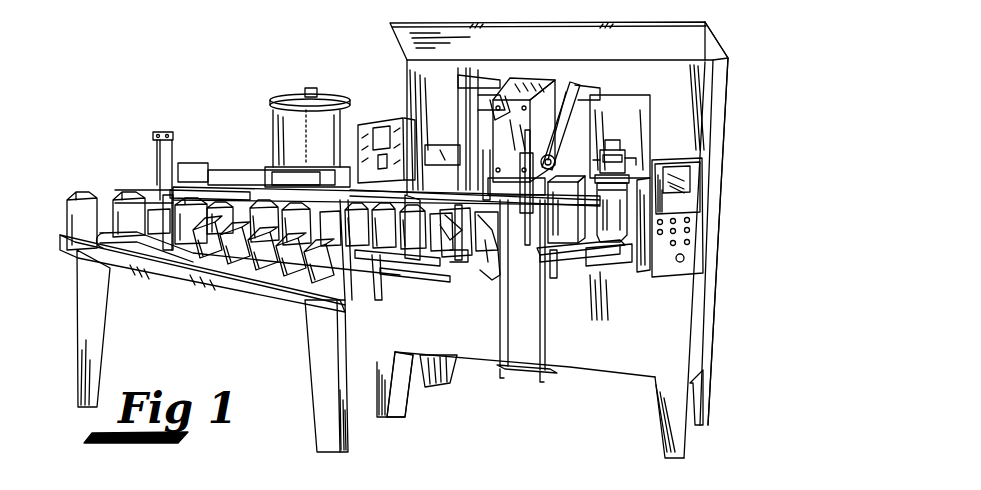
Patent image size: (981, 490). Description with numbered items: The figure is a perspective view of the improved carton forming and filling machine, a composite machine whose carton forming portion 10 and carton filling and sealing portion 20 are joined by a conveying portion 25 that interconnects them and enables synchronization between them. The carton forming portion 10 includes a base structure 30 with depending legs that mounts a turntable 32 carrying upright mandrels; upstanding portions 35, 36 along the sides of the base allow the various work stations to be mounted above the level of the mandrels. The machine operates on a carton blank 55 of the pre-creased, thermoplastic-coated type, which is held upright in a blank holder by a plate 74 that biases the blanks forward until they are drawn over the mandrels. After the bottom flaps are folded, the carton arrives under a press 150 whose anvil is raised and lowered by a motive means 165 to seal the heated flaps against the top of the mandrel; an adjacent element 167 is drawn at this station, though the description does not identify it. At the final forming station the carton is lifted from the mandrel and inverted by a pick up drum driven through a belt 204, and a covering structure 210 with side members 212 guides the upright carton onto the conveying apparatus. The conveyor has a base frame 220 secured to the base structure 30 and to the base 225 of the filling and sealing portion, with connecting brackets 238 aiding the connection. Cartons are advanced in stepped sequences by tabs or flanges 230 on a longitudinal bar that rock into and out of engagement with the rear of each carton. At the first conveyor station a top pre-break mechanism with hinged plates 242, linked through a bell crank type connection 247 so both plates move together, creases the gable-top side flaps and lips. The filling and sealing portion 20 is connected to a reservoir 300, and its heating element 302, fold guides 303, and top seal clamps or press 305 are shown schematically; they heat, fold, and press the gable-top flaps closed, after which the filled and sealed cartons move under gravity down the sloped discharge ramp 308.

The carton forming portion 10 is at (743, 66).
The carton filling and sealing portion 20 is at (224, 52).
The conveying portion 25 is at (412, 326).
The base structure 30 is at (613, 378).
The turntable 32 is at (598, 265).
The upstanding portion 35 is at (722, 120).
The upstanding portion 36 is at (403, 104).
The carton blank 55 is at (470, 136).
The plate 74 is at (462, 158).
The press 150 is at (660, 151).
The motive means 165 is at (630, 142).
The container 167 is at (618, 262).
The belt 204 is at (575, 112).
The covering structure 210 is at (510, 92).
The side members 212 is at (565, 262).
The base frame 220 is at (392, 260).
The base 225 is at (300, 358).
The tabs or flanges 230 is at (382, 268).
The connecting brackets 238 is at (525, 375).
The hinged plates 242 is at (492, 275).
The bell crank type connection 247 is at (458, 262).
The reservoir 300 is at (325, 100).
The heating element 302 is at (228, 170).
The fold guides 303 is at (193, 193).
The top seal clamps or press 305 is at (185, 160).
The discharge ramp 308 is at (163, 283).